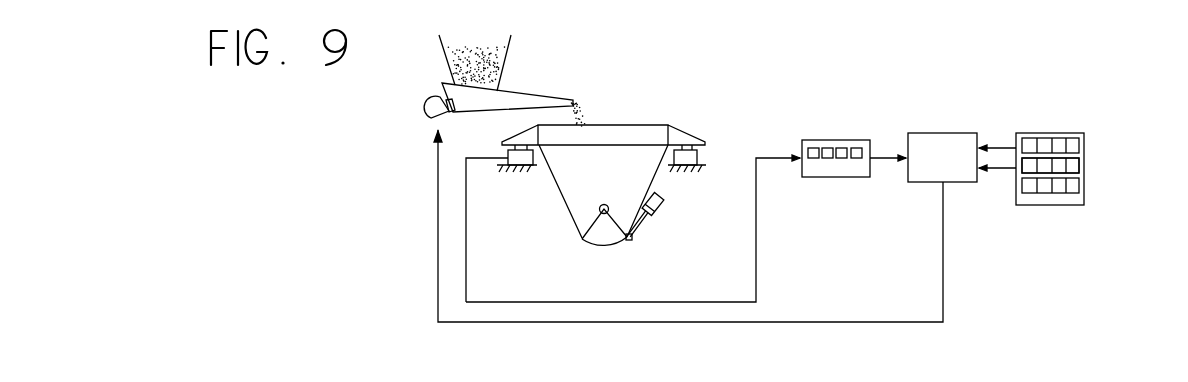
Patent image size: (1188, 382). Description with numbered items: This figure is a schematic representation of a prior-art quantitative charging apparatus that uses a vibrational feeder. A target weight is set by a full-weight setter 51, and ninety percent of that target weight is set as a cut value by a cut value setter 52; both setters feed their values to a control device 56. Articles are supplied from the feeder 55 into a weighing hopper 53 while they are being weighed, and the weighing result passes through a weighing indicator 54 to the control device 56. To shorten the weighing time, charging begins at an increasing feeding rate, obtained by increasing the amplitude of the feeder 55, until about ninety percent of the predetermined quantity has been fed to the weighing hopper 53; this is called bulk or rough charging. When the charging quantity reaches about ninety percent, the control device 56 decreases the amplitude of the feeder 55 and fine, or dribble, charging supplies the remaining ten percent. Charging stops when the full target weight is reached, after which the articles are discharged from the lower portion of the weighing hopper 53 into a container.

The 100% setter 51 is at (1084, 144).
The cut value setter 52 is at (1084, 164).
The weighing hopper 53 is at (560, 188).
The weight indicator / weighing unit 54 is at (835, 140).
The feeder 55 is at (553, 97).
The control device 56 is at (948, 133).